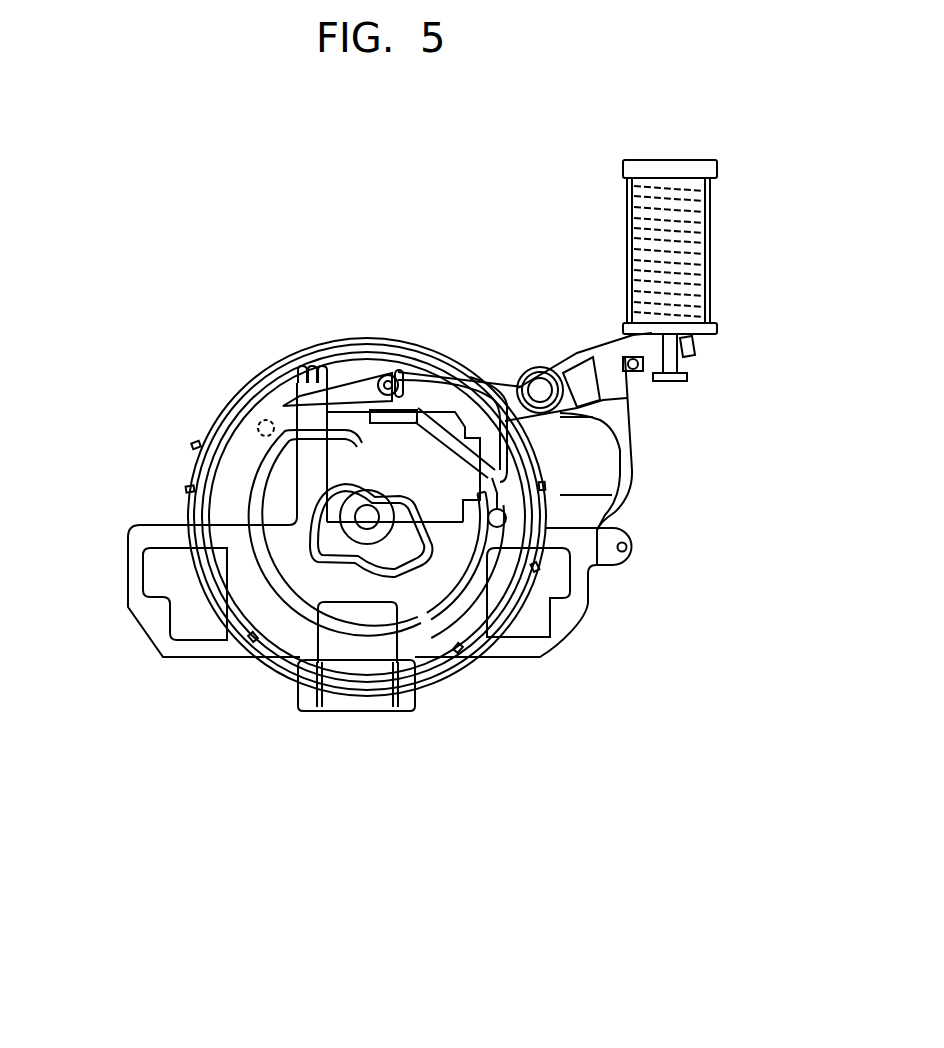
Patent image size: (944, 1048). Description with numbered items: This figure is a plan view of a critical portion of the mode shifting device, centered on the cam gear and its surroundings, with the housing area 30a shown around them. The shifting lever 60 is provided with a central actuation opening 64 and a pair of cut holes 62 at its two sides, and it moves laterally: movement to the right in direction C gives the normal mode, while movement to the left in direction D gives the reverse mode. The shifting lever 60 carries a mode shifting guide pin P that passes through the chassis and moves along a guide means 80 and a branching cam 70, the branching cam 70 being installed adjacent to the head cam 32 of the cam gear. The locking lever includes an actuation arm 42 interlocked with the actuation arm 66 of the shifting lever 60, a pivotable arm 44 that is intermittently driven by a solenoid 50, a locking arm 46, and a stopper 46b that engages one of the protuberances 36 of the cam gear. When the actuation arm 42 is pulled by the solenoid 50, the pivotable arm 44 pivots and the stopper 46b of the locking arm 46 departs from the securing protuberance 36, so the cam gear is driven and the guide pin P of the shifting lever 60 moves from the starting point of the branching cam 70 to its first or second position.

The housing opening 30a is at (233, 463).
The head cam 32 is at (303, 550).
The protuberance 36 is at (627, 507).
The actuation arm 42 is at (610, 567).
The pivotable arm 44 is at (600, 338).
The locking arm 46 is at (462, 417).
The stopper 46b is at (386, 372).
The solenoid 50 is at (712, 268).
The shifting lever 60 is at (560, 637).
The cut hole 62 is at (525, 635).
The actuation opening 64 is at (353, 668).
The actuation arm 66 is at (633, 550).
The branching cam 70 is at (333, 365).
The guide means 80 is at (248, 512).
The mode shifting guide pin P is at (264, 420).
The direction D is at (338, 751).
The direction C is at (380, 751).